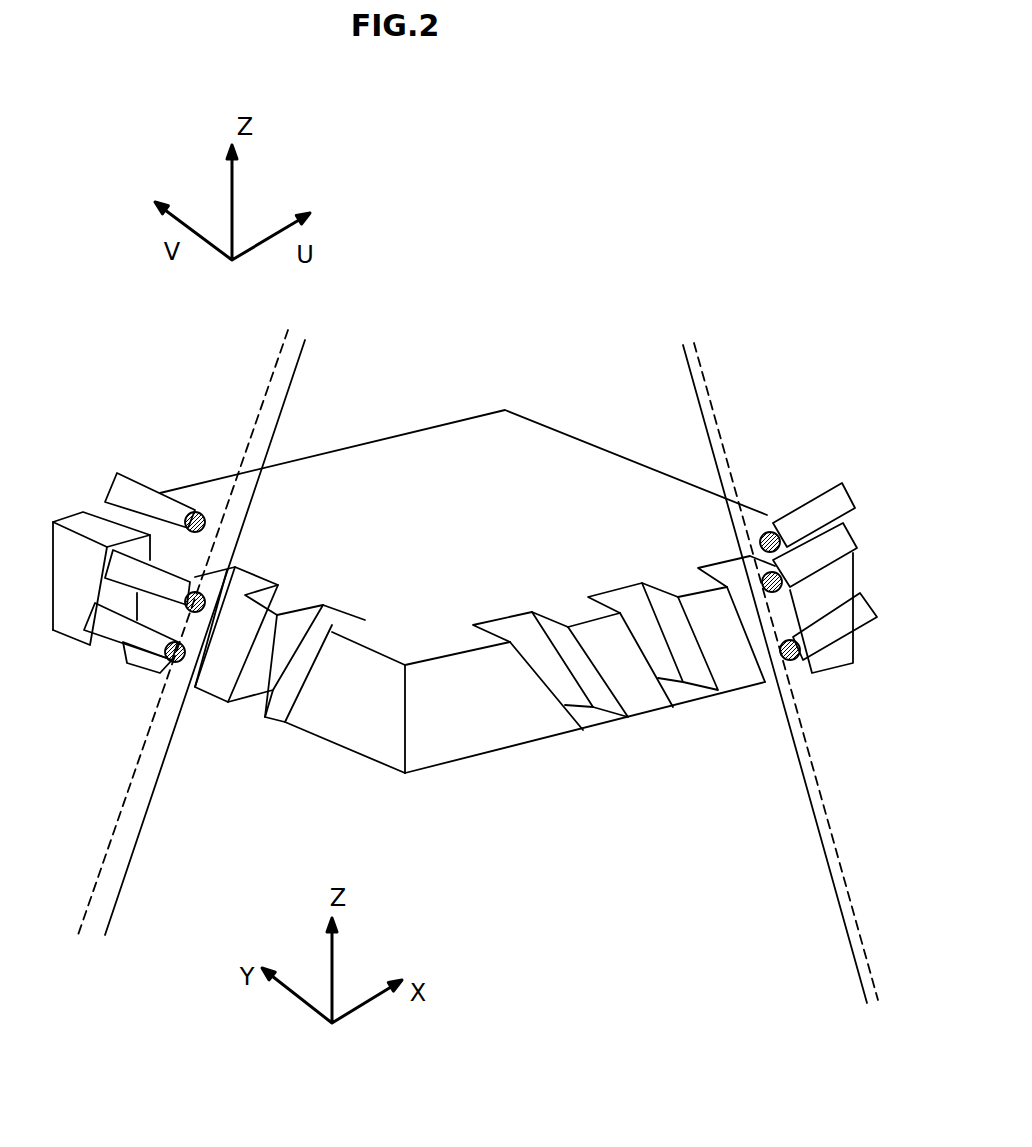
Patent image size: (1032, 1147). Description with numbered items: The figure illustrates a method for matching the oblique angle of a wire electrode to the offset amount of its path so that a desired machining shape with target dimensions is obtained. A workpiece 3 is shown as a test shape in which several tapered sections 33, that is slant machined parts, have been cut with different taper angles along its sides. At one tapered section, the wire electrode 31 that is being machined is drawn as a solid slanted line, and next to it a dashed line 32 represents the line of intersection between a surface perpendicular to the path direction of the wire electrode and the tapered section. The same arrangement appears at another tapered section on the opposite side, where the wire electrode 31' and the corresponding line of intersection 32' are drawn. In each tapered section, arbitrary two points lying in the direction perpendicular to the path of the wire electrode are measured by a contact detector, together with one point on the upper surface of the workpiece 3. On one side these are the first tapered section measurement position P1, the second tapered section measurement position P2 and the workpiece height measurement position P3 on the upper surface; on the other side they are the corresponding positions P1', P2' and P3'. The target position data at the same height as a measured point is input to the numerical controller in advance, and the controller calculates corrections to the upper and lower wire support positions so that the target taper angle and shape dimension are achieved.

The workpiece 3 is at (508, 442).
The wire electrode 31 is at (237, 629).
The line of intersection 32 is at (183, 629).
The wire electrode 31' is at (744, 665).
The line of intersection 32' is at (786, 664).
The tapered section 33 is at (246, 595).
The first tapered section measurement position P1 is at (123, 531).
The second tapered section measurement position P2 is at (128, 655).
The workpiece height measurement position P3 is at (161, 467).
The first tapered section measurement position P1' is at (837, 557).
The second tapered section measurement position P2' is at (833, 667).
The workpiece upper surface measurement position P3' is at (807, 477).